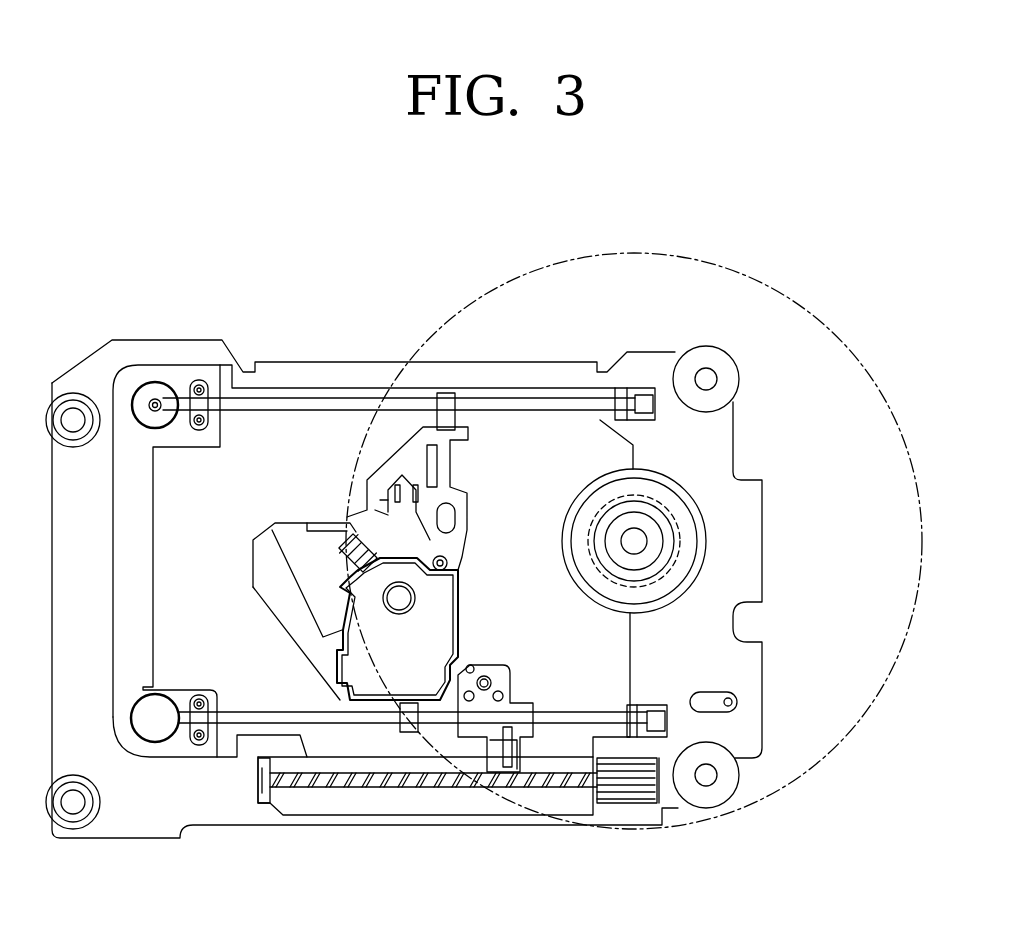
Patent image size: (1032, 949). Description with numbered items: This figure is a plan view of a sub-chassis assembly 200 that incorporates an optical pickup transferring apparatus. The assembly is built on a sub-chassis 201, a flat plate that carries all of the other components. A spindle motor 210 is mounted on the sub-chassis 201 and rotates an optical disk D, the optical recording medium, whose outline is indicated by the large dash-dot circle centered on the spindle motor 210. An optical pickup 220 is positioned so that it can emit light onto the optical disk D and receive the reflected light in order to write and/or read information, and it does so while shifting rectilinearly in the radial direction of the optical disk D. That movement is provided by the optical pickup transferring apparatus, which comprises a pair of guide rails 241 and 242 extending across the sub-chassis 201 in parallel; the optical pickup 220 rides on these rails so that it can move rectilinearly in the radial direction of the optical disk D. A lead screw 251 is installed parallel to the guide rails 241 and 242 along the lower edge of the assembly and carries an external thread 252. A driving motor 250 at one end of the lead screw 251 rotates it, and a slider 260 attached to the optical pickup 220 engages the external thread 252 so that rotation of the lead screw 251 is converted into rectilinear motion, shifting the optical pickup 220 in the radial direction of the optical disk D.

The optical disc drive 200 is at (143, 323).
The sub-chassis 201 is at (137, 807).
The spindle motor 210 is at (613, 492).
The optical pickup 220 is at (324, 515).
The guide rail 241 is at (345, 403).
The guide rail 242 is at (563, 718).
The driving motor 250 is at (630, 793).
The lead screw 251 is at (327, 783).
The external thread 252 is at (362, 783).
The slider 260 is at (402, 703).
The optical disk D is at (755, 295).